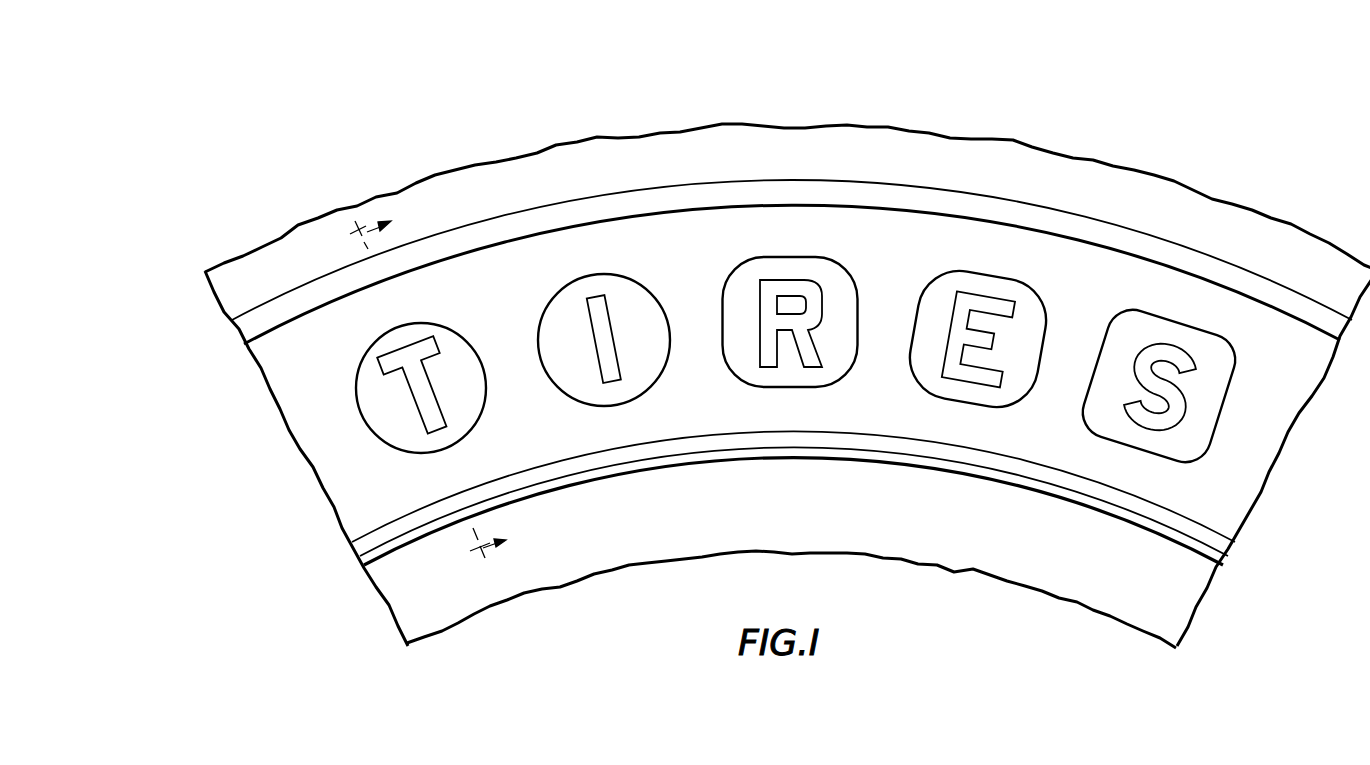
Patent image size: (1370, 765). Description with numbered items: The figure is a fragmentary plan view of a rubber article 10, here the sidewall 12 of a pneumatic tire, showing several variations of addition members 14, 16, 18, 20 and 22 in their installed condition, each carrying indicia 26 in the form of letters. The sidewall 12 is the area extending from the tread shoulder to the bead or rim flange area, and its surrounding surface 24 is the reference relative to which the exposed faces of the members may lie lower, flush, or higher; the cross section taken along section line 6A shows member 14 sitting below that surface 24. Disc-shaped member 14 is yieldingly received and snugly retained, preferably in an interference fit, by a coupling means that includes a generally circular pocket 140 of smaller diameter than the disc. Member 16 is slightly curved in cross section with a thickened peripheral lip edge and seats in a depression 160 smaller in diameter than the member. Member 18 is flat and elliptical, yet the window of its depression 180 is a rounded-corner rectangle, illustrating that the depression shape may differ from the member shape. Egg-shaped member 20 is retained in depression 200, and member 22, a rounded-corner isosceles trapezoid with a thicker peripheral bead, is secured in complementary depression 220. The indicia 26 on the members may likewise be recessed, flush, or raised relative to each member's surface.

The rubber article 10 is at (516, 160).
The sidewall 12 is at (1141, 173).
The surrounding surface 24 is at (352, 518).
The section line 6A- 6A is at (439, 385).
The addition member 14 is at (448, 375).
The pocket 140 is at (488, 427).
The addition member 16 is at (616, 322).
The depression 160 is at (567, 291).
The addition member 18 is at (809, 300).
The depression 180 is at (752, 262).
The addition member 20 is at (1000, 321).
The depression 200 is at (949, 272).
The addition member 22 is at (1188, 386).
The depression 220 is at (1237, 390).
The indicia 26 is at (425, 427).